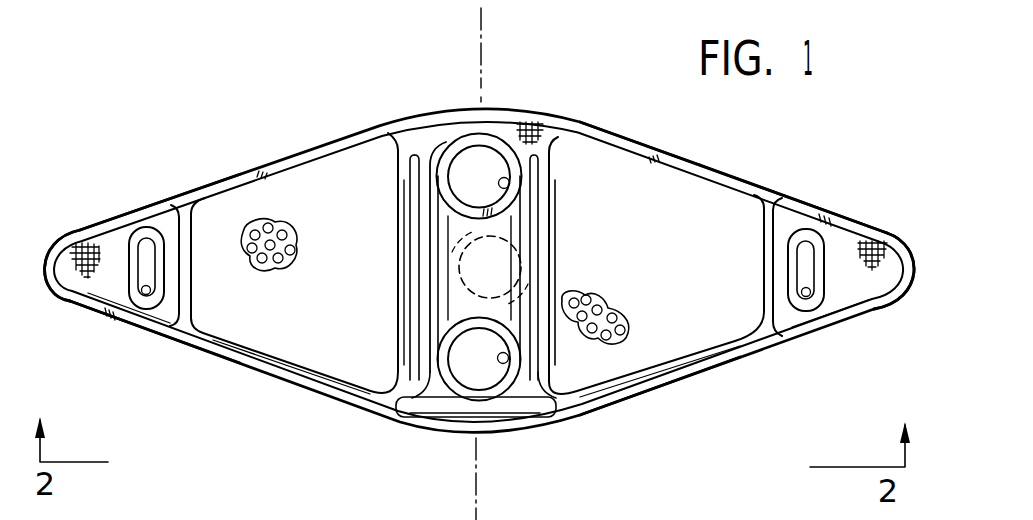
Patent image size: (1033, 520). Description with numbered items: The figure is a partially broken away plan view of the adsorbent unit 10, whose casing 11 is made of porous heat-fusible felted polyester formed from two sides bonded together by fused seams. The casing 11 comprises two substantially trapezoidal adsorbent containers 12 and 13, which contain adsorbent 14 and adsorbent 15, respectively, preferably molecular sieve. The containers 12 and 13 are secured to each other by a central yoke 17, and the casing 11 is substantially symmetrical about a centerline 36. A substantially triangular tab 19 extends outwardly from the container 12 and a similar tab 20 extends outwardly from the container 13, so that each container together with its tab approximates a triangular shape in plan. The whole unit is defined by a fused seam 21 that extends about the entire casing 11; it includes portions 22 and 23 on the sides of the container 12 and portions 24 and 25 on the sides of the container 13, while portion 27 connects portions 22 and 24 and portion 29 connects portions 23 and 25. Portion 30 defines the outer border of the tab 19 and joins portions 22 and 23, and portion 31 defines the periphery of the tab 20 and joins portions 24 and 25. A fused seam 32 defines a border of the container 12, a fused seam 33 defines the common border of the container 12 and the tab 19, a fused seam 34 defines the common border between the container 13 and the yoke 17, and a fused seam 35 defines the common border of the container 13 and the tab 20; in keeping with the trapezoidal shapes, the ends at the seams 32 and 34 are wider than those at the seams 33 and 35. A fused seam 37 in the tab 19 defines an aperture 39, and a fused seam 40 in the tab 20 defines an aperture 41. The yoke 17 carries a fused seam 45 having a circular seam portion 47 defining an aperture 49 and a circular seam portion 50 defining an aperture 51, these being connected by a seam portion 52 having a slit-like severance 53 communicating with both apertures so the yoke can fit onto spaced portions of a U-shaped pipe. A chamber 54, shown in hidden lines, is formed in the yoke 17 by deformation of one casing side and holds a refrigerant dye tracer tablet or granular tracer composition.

The adsorbent unit 10 is at (586, 79).
The casing 11 is at (580, 124).
The adsorbent container 12 is at (660, 190).
The adsorbent container 13 is at (322, 173).
The adsorbent 14 is at (610, 308).
The adsorbent 15 is at (283, 272).
The yoke 17 is at (508, 132).
The tab 19 is at (840, 247).
The tab 20 is at (113, 243).
The fused seam 21 is at (638, 398).
The fused seam portion 22 is at (720, 178).
The fused seam portion 23 is at (688, 378).
The fused seam portion 24 is at (238, 175).
The fused seam portion 25 is at (224, 360).
The fused seam portion 27 is at (477, 130).
The fused seam portion 29 is at (510, 431).
The fused seam portion 30 is at (877, 312).
The fused seam portion 31 is at (67, 303).
The fused seam 32 is at (539, 247).
The fused seam 33 is at (770, 272).
The fused seam 34 is at (411, 267).
The fused seam 35 is at (181, 247).
The centerline 36 is at (483, 52).
The fused seam 37 is at (803, 230).
The aperture 39 is at (807, 296).
The fused seam 40 is at (155, 227).
The aperture 41 is at (143, 296).
The fused seam 45 is at (479, 133).
The circular seam portion 47 is at (428, 160).
The aperture 49 is at (504, 183).
The circular seam portion 50 is at (452, 394).
The aperture 51 is at (501, 357).
The fused seam portion 52 is at (419, 307).
The severance 53 is at (430, 237).
The chamber 54 is at (507, 272).